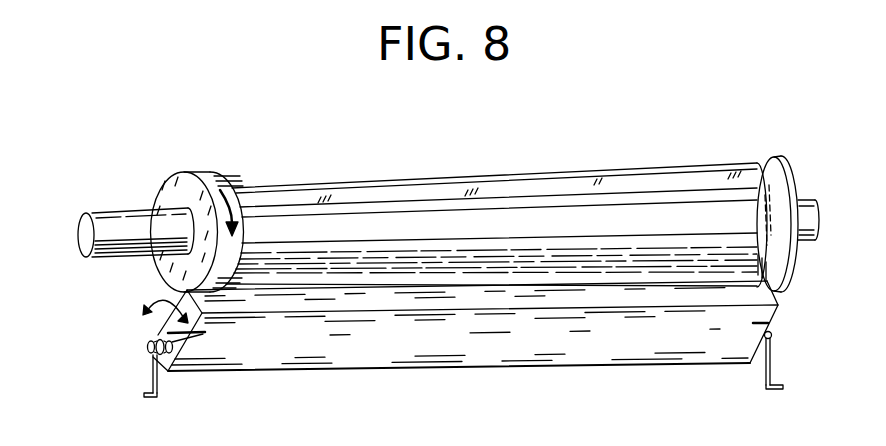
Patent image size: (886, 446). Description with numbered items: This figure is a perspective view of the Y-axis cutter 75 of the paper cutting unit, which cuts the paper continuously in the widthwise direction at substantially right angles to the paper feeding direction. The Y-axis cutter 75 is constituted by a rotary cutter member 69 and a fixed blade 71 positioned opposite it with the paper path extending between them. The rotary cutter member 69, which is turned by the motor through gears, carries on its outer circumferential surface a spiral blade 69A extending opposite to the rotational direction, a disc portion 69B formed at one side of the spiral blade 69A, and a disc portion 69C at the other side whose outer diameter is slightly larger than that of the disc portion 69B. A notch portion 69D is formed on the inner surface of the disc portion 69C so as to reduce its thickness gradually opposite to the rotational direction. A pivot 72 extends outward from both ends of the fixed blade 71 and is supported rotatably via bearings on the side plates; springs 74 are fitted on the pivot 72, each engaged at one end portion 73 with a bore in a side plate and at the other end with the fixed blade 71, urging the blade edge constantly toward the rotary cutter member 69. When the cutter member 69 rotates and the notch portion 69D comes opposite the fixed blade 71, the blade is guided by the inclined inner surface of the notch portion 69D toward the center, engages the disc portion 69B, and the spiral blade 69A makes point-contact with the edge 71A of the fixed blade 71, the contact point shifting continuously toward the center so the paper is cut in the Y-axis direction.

The rotary cutter member 69 is at (370, 232).
The spiral blade 69A is at (630, 185).
The disc portion 69B is at (205, 174).
The disc portion 69C is at (790, 197).
The notch portion 69D is at (777, 187).
The fixed blade 71 is at (465, 350).
The edge of the fixed blade 71A is at (478, 283).
The pivot 72 is at (150, 348).
The end portion of spring 73 is at (142, 397).
The spring 74 is at (158, 385).
The Y-axis cutter 75 is at (741, 143).